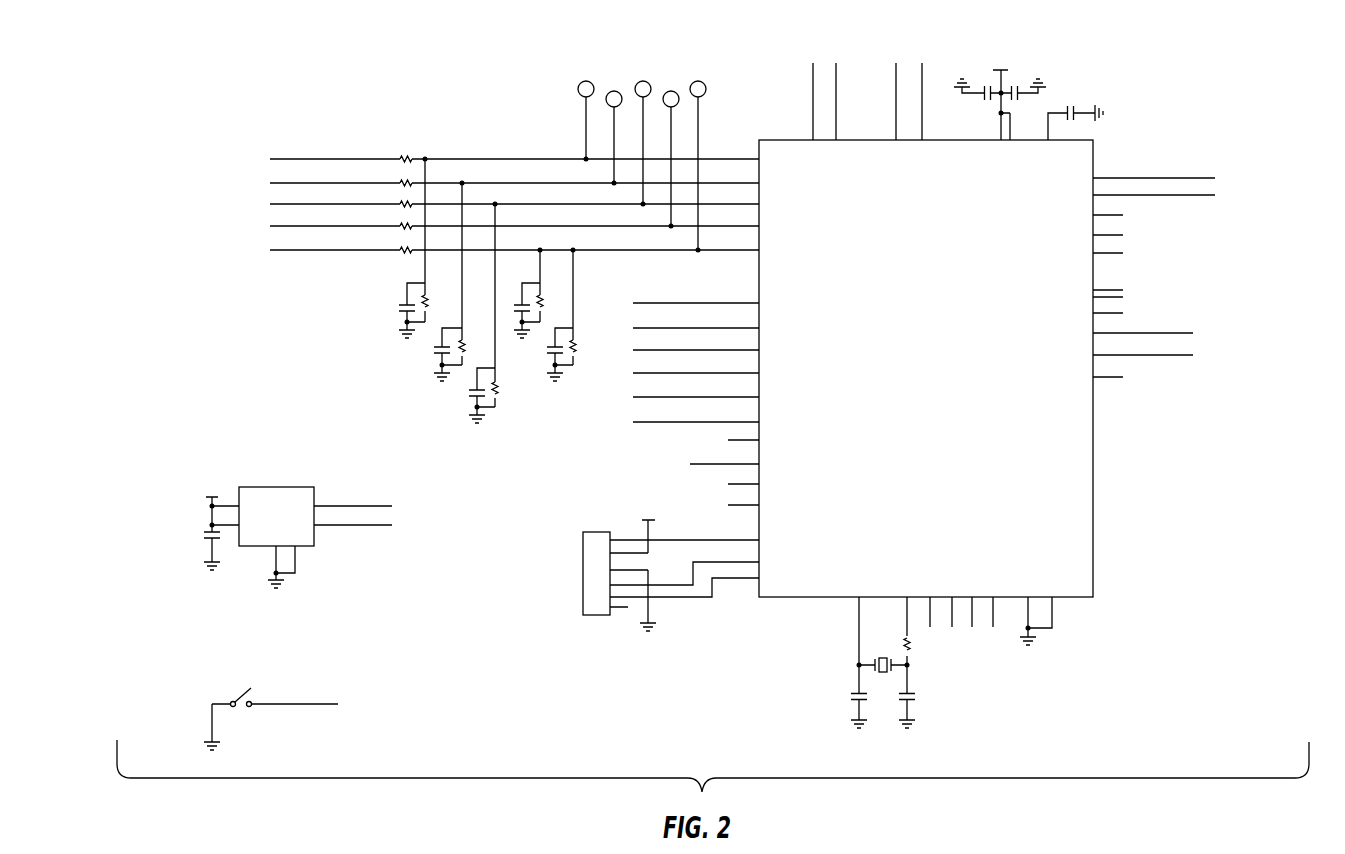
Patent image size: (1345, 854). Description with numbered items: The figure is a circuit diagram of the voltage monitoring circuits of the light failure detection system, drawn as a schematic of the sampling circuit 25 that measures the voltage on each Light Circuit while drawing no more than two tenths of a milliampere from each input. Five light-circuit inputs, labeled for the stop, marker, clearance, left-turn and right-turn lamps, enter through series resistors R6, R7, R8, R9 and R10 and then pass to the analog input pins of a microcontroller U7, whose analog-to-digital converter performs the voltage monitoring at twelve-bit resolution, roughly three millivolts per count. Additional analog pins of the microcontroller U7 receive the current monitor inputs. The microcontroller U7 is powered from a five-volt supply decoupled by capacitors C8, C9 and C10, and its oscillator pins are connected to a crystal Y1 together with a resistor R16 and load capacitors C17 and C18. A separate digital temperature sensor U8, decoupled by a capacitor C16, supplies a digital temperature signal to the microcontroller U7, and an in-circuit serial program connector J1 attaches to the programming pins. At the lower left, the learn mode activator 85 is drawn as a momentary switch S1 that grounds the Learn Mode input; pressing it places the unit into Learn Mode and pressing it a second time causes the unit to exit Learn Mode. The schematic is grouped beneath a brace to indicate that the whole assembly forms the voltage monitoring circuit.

The sampling circuit 25 is at (208, 113).
The learn mode activator 85 is at (358, 675).
The microcontroller U7 is at (940, 363).
The digital temperature sensor U8 is at (276, 503).
The in-circuit serial program connector J1 is at (591, 559).
The learn mode switch contact S1 is at (242, 689).
The crystal Y1 is at (883, 654).
The resistor R6 is at (406, 147).
The resistor R7 is at (412, 181).
The resistor R8 is at (412, 202).
The resistor R9 is at (412, 224).
The resistor R10 is at (395, 262).
The resistor R16 is at (923, 648).
The capacitor C8 is at (983, 82).
The capacitor C9 is at (1017, 82).
The capacitor C10 is at (1072, 99).
The capacitor C16 is at (197, 538).
The capacitor C17 is at (844, 698).
The capacitor C18 is at (923, 698).